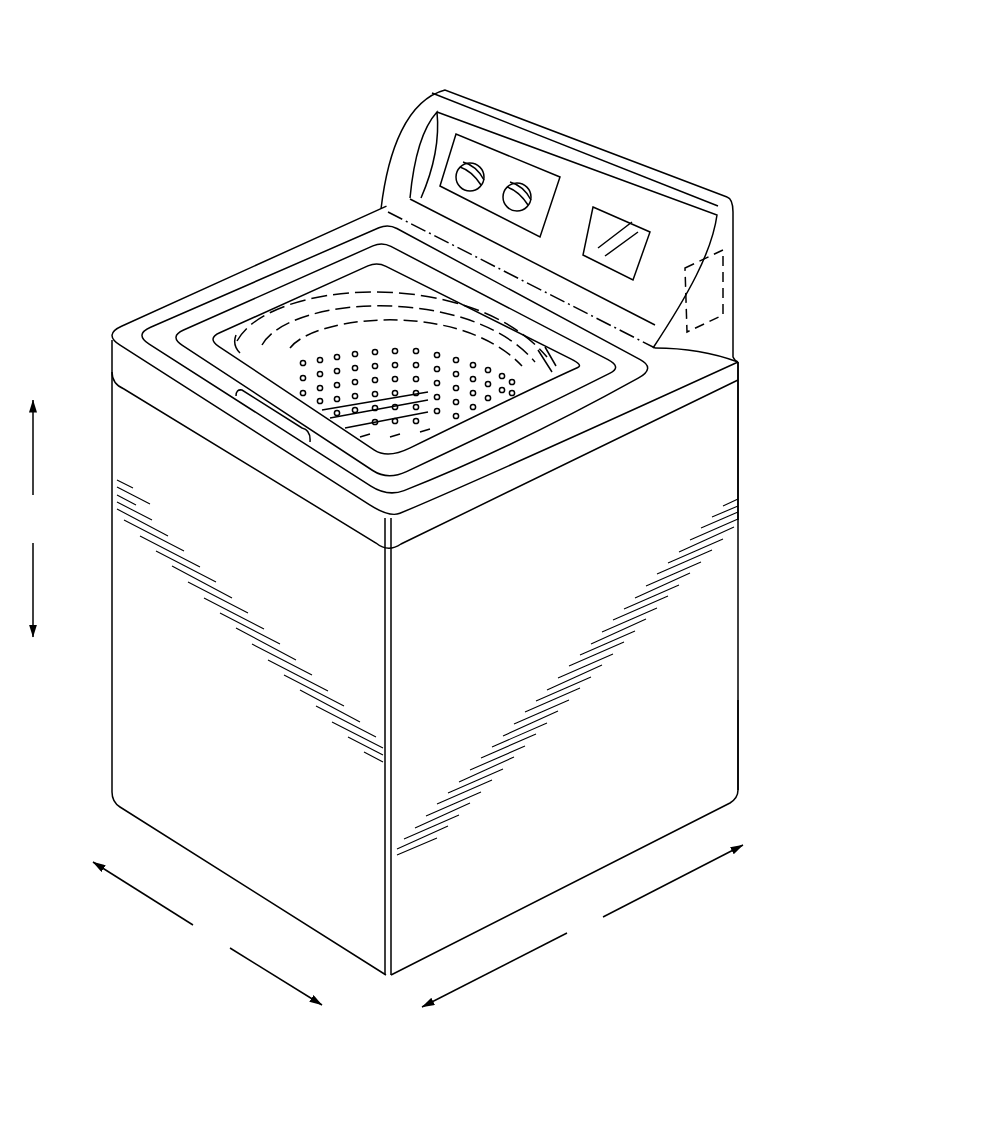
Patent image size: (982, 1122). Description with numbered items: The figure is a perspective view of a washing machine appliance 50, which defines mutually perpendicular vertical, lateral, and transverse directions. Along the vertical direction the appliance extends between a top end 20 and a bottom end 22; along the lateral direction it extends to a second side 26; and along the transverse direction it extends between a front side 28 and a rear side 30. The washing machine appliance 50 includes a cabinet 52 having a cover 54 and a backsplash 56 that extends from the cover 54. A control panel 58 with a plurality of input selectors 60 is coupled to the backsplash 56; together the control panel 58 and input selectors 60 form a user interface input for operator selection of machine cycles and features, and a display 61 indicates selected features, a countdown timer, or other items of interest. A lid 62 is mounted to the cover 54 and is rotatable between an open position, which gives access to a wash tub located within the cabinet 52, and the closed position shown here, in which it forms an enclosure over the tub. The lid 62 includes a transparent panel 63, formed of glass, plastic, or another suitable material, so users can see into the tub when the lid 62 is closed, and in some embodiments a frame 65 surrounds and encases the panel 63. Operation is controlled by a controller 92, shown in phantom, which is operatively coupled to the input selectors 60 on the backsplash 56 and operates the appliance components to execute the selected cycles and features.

The washing machine appliance 50 is at (216, 95).
The top end 20 is at (774, 310).
The bottom end 22 is at (774, 780).
The second side 26 is at (659, 687).
The front side 28 is at (138, 638).
The rear side 30 is at (759, 447).
The cabinet 52 is at (710, 593).
The cover 54 is at (201, 313).
The backsplash 56 is at (580, 193).
The control panel 58 is at (512, 150).
The input selectors 60 is at (510, 178).
The display 61 is at (635, 233).
The lid 62 is at (383, 285).
The transparent panel 63 is at (364, 280).
The frame 65 is at (270, 303).
The controller 92 is at (706, 296).